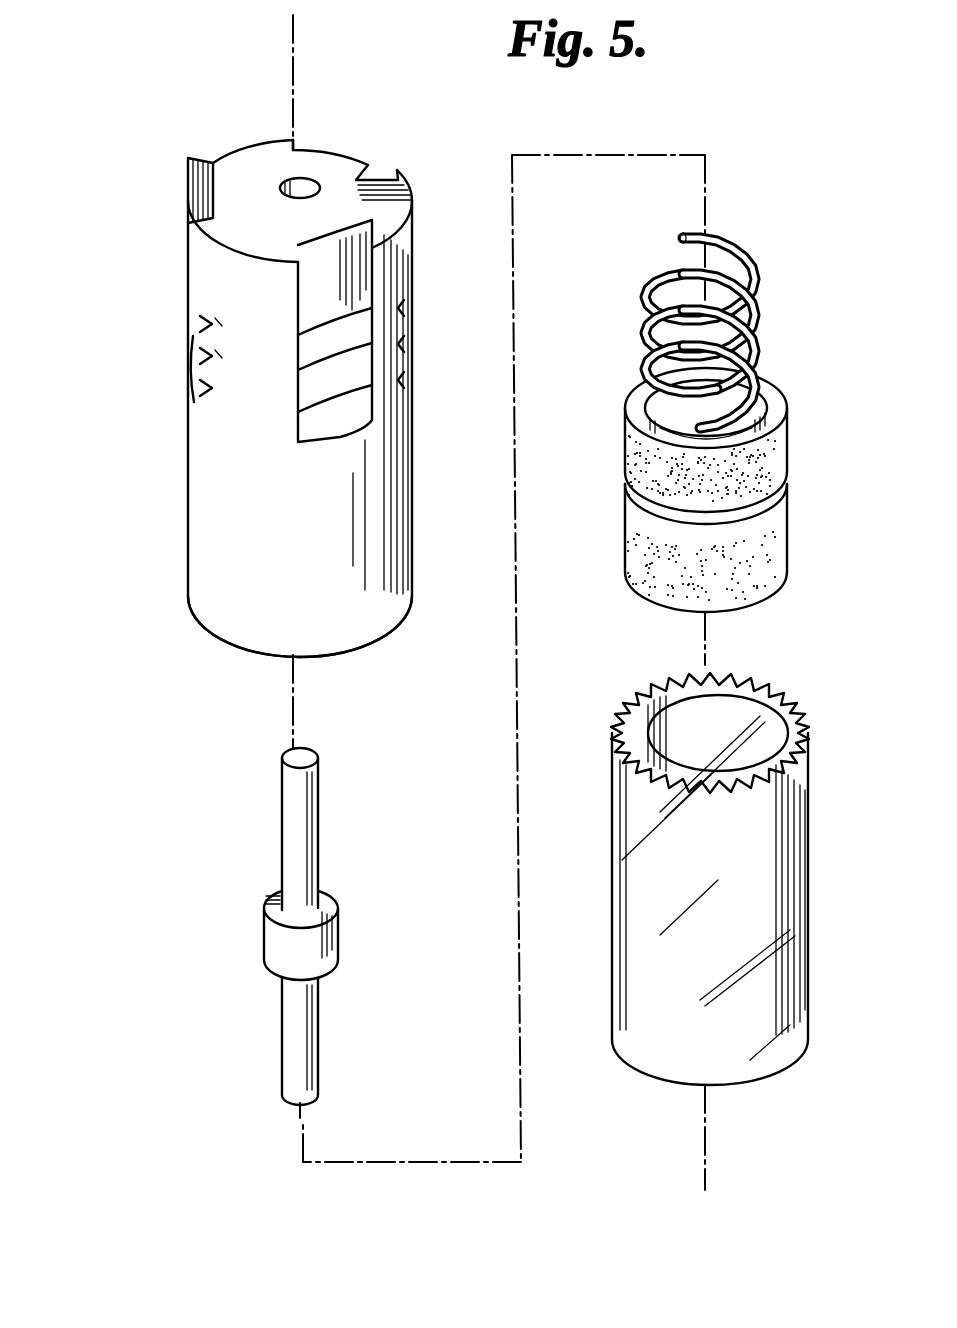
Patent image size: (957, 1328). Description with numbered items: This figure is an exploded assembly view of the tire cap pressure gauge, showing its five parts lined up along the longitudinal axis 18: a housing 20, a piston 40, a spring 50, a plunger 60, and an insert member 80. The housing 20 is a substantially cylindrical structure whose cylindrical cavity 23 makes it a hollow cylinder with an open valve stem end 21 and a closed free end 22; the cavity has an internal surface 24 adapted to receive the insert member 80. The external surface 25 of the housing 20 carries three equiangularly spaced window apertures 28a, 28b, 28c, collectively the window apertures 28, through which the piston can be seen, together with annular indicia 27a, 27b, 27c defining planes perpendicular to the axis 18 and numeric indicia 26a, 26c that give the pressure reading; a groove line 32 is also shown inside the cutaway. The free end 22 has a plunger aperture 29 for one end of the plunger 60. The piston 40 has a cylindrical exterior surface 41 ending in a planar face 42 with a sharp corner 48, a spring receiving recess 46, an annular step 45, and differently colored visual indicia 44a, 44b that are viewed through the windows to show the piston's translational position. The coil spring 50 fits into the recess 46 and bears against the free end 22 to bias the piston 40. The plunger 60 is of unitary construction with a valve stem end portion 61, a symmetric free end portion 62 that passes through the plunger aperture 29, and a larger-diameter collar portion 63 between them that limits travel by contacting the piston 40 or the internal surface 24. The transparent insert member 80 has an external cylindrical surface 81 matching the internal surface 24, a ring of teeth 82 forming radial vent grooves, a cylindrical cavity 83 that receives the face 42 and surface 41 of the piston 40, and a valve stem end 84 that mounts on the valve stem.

The longitudinal axis 18 is at (293, 50).
The housing 20 is at (186, 543).
The valve stem end 21 is at (372, 644).
The free end 22 is at (366, 178).
The cylindrical cavity 23 is at (226, 655).
The internal surface 24 is at (298, 422).
The external surface 25 is at (388, 523).
The numeric indicia 26a is at (232, 312).
The numeric indicia 26c is at (414, 296).
The annular indicia 27a is at (196, 336).
The annular indicia 27b is at (196, 372).
The annular indicia 27c is at (196, 410).
The window apertures 28 is at (298, 380).
The window aperture 28a is at (180, 190).
The window aperture 28b is at (334, 128).
The window aperture 28c is at (328, 398).
The plunger aperture 29 is at (290, 180).
The internal groove 32 is at (298, 342).
The piston 40 is at (688, 477).
The cylindrical exterior surface 41 is at (780, 390).
The planar face 42 is at (760, 602).
The visual indicia 44a is at (660, 493).
The visual indicia 44b is at (755, 560).
The annular step 45 is at (626, 480).
The spring receiving recess 46 is at (650, 405).
The sharp corner 48 is at (648, 590).
The spring 50 is at (758, 318).
The plunger 60 is at (294, 926).
The valve stem end portion 61 is at (305, 1052).
The free end portion 62 is at (305, 868).
The collar portion 63 is at (285, 946).
The insert member 80 is at (702, 913).
The external cylindrical surface 81 is at (806, 915).
The ring of teeth 82 is at (645, 778).
The cylindrical cavity 83 is at (768, 742).
The valve stem end 84 is at (665, 1086).